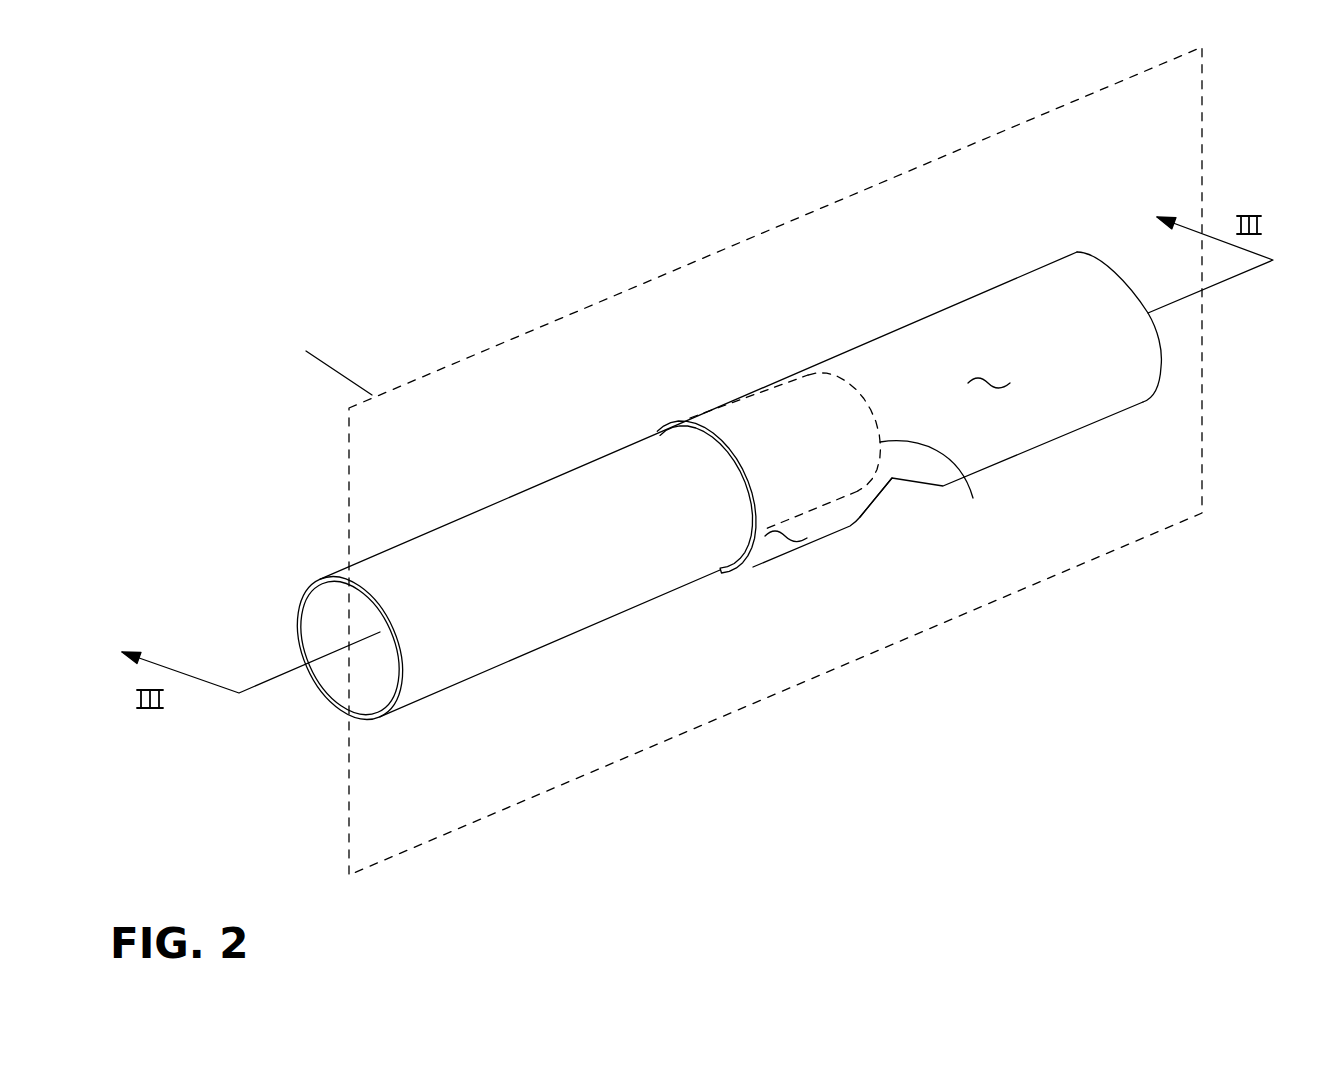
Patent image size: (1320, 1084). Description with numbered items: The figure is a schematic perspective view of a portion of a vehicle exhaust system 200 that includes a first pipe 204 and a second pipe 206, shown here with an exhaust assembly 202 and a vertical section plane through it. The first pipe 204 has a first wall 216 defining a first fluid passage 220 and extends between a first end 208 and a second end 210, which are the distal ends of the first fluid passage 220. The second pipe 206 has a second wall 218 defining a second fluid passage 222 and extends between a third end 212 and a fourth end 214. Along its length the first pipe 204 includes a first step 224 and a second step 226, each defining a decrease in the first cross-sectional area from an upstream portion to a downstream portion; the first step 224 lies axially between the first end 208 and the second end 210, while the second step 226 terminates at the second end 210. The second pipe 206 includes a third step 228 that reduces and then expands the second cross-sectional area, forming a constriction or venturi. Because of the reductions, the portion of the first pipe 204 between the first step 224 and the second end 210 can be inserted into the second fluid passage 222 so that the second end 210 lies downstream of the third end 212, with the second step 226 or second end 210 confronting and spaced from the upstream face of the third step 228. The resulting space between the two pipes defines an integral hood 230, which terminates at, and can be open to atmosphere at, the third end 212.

The vehicle exhaust system 200 is at (267, 242).
The tube 202 is at (313, 568).
The first pipe 204 is at (493, 687).
The second pipe 206 is at (1020, 460).
The first end 208 is at (330, 692).
The second end 210 is at (937, 486).
The third end 212 is at (657, 433).
The fourth end 214 is at (1120, 275).
The first wall 216 is at (576, 632).
The second wall 218 is at (1095, 423).
The first fluid passage 220 is at (316, 626).
The second fluid passage 222 is at (992, 383).
The first step 224 is at (720, 558).
The second step 226 is at (798, 372).
The third step 228 is at (868, 506).
The integral hood 230 is at (787, 540).